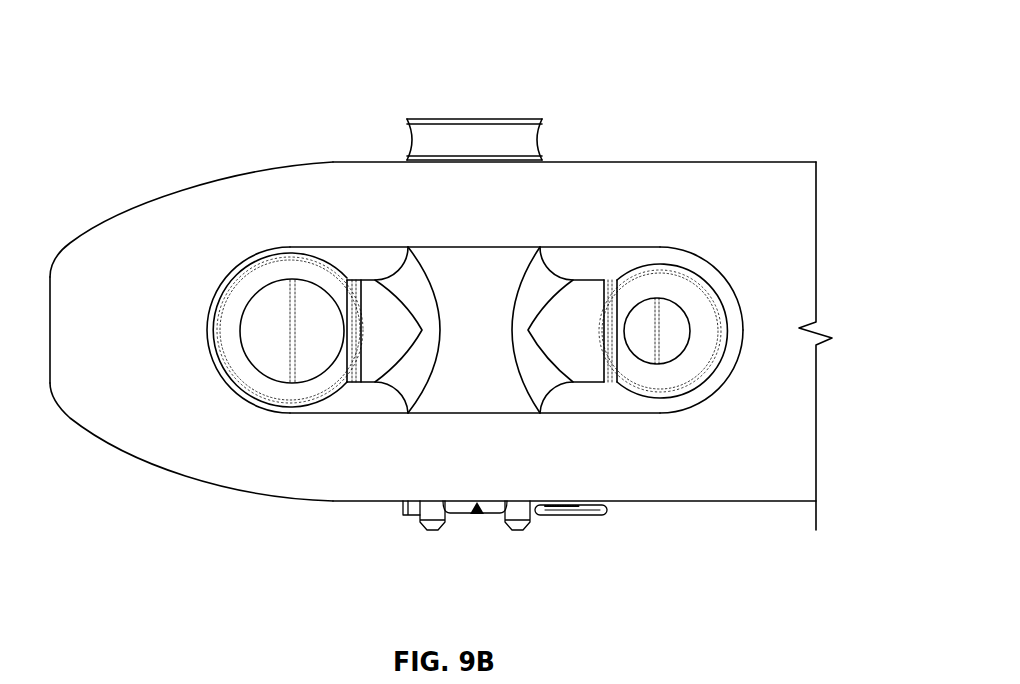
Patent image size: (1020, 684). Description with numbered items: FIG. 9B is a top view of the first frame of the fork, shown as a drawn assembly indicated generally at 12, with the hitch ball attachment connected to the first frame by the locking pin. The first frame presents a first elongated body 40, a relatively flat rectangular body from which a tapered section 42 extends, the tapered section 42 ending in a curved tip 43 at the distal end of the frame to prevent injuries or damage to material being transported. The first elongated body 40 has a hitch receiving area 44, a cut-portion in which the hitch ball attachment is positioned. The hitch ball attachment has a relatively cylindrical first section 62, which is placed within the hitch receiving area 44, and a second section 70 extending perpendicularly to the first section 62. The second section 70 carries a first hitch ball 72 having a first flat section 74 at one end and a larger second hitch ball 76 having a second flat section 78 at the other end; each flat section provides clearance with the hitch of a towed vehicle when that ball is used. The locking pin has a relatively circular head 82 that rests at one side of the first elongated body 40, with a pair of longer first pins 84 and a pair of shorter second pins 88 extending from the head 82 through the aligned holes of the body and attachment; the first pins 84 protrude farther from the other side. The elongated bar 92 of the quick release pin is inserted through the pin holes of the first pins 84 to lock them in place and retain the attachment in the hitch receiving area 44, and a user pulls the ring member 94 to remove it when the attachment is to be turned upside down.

The pump assembly 12 is at (110, 38).
The first elongated body 40 is at (460, 324).
The tapered section 42 is at (205, 196).
The tip 43 is at (60, 256).
The hitch receiving area 44 is at (763, 386).
The first section 62 is at (493, 272).
The second section 70 is at (589, 284).
The first hitch ball 72 is at (673, 285).
The first flat section 74 is at (668, 325).
The second hitch ball 76 is at (280, 398).
The second flat section 78 is at (313, 302).
The head 82 is at (448, 137).
The first pins 84 is at (428, 516).
The second pins 88 is at (470, 514).
The elongated bar 92 is at (490, 513).
The ring member 94 is at (580, 513).